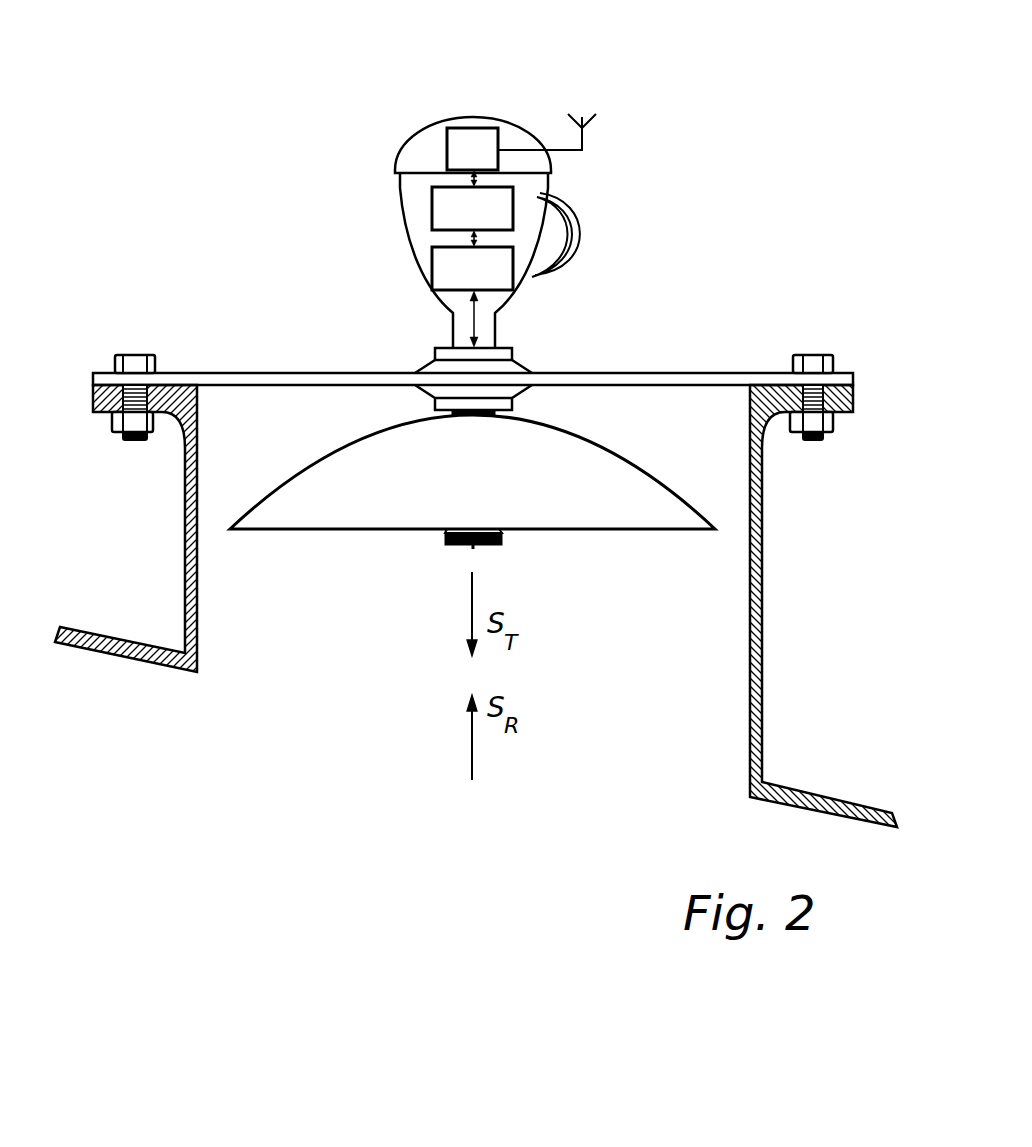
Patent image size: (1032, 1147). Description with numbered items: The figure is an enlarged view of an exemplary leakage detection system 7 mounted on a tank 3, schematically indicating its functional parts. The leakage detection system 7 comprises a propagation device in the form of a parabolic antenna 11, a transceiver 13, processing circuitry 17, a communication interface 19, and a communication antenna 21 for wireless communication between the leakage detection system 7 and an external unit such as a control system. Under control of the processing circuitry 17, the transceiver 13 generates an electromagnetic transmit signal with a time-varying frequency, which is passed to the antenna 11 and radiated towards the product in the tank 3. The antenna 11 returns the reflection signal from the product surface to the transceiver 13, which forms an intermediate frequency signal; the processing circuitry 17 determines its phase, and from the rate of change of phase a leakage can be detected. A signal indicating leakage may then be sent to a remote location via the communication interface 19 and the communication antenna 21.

The tank 3 is at (836, 797).
The leakage detection system 7 is at (577, 84).
The parabolic antenna 11 is at (640, 480).
The transceiver 13 is at (513, 282).
The processing circuitry 17 is at (432, 200).
The communication interface 19 is at (467, 128).
The communication antenna 21 is at (585, 143).